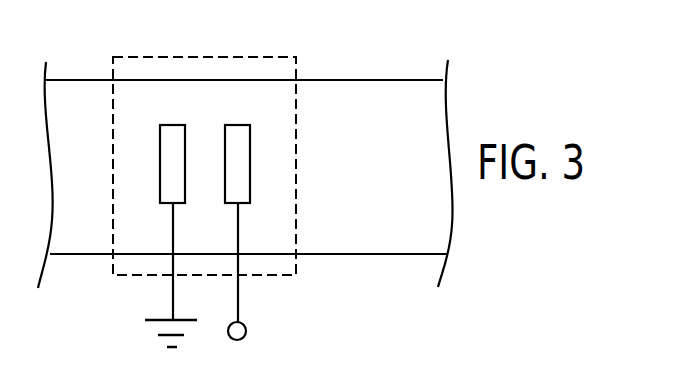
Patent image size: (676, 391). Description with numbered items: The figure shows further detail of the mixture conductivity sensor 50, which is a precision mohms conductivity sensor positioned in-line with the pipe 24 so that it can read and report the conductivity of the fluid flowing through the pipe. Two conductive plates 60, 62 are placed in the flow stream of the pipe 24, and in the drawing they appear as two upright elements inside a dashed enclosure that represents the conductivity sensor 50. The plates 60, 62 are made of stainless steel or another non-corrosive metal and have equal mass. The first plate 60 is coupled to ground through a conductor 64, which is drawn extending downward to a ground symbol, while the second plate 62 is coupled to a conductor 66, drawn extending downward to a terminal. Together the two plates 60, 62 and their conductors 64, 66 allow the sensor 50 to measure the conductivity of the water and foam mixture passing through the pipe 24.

The pipe 24 is at (364, 79).
The conductivity sensor 50 is at (229, 56).
The conductive plate 60 is at (160, 150).
The conductive plate 62 is at (250, 169).
The conductor 64 is at (161, 318).
The conductor 66 is at (245, 337).